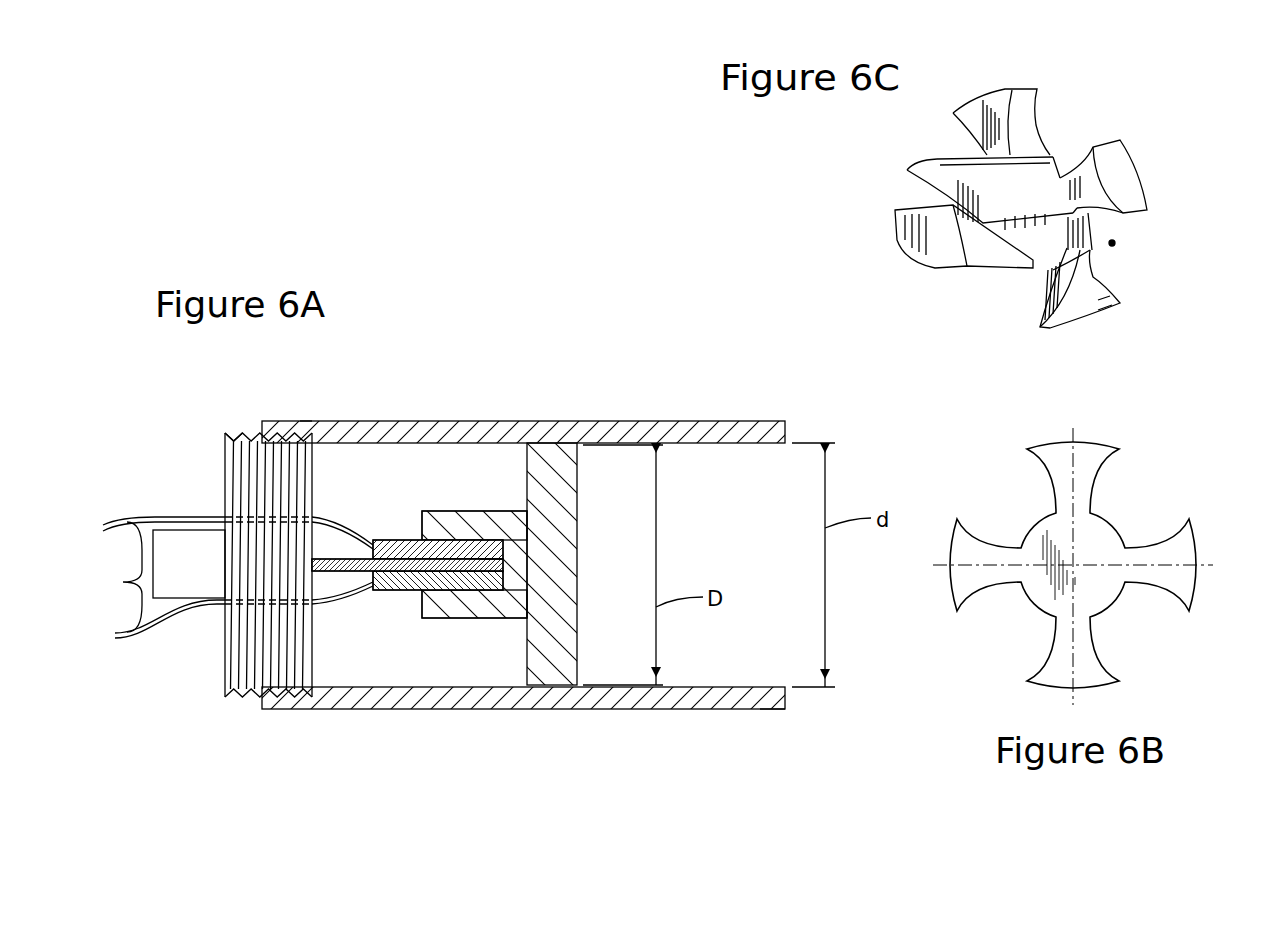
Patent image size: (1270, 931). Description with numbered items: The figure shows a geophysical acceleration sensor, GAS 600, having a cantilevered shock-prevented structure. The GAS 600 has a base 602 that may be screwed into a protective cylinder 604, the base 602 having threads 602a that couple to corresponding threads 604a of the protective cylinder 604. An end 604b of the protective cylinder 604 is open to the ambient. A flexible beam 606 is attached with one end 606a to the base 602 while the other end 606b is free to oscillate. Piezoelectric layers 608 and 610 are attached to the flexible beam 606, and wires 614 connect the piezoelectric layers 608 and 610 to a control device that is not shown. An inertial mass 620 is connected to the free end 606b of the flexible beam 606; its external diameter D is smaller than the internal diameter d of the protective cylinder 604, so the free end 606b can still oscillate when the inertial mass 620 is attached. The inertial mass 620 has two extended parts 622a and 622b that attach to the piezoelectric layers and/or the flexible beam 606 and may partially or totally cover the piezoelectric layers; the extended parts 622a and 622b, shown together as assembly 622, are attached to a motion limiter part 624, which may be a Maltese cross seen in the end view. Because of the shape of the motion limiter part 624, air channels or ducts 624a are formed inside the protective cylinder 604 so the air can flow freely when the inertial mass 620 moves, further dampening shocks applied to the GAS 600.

In FIG. 6A, the geophysical acceleration sensor (GAS) 600 is at (530, 319).
In FIG. 6A, the base 602 is at (223, 490).
In FIG. 6A, the threads 602a is at (239, 436).
In FIG. 6A, the protective cylinder 604 is at (465, 695).
In FIG. 6A, the threads 604a is at (298, 437).
In FIG. 6A, the end 604b is at (766, 700).
In FIG. 6A, the flexible beam 606 is at (347, 557).
In FIG. 6A, the end 606a is at (331, 568).
In FIG. 6A, the end 606b is at (493, 565).
In FIG. 6A, the piezoelectric layer 608 is at (393, 582).
In FIG. 6A, the piezoelectric layer 610 is at (397, 547).
In FIG. 6A, the wires 614 is at (154, 577).
In FIG. 6A, the inertial mass 620 is at (632, 509).
In FIG. 6A, the support member 622 is at (468, 576).
In FIG. 6C, the support member 622 is at (1063, 64).
In FIG. 6A, the extended part 622a is at (457, 612).
In FIG. 6C, the extended part 622a is at (965, 243).
In FIG. 6A, the extended part 622b is at (448, 523).
In FIG. 6C, the extended part 622b is at (968, 162).
In FIG. 6A, the motion limiter part 624 is at (565, 470).
In FIG. 6C, the motion limiter part 624 is at (1020, 112).
In FIG. 6B, the motion limiter part 624 is at (1090, 548).
In FIG. 6C, the air channels (ducts) 624a is at (1118, 243).